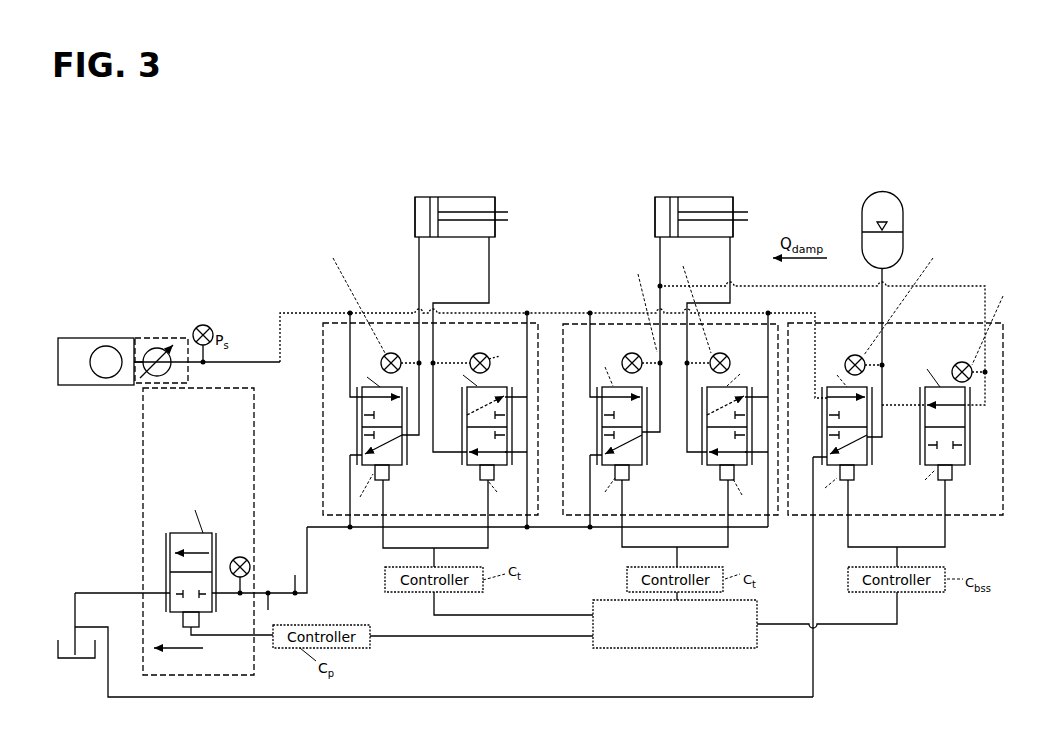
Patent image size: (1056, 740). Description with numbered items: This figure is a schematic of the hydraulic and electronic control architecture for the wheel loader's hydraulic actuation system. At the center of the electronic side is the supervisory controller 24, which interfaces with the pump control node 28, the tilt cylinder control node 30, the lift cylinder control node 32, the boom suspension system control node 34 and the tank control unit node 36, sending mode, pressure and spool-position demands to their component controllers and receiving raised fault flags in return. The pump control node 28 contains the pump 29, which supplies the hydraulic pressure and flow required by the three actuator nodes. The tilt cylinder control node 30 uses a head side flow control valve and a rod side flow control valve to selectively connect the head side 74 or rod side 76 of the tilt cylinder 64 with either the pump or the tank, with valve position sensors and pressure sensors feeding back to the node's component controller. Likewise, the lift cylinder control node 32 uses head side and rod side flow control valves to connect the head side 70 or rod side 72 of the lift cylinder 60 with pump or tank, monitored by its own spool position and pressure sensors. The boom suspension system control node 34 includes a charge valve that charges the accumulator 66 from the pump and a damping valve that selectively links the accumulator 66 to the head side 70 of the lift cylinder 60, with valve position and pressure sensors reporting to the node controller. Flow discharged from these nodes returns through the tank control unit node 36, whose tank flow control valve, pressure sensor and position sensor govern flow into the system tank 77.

The supervisory controller 24 is at (677, 650).
The pump control node 28 is at (88, 337).
The pump 29 is at (152, 346).
The tilt cylinder control node 30 is at (323, 432).
The lift cylinder control node 32 is at (568, 322).
The boom suspension system control node 34 is at (1003, 358).
The tank control unit node 36 is at (143, 516).
The lift cylinder 60 is at (694, 181).
The tilt cylinder 64 is at (454, 179).
The accumulator 66 is at (885, 192).
The head side of lift cylinder 70 is at (663, 203).
The rod side of lift cylinder 72 is at (722, 203).
The head side of tilt cylinder 74 is at (423, 200).
The rod side of tilt cylinder 76 is at (482, 205).
The system tank 77 is at (68, 660).